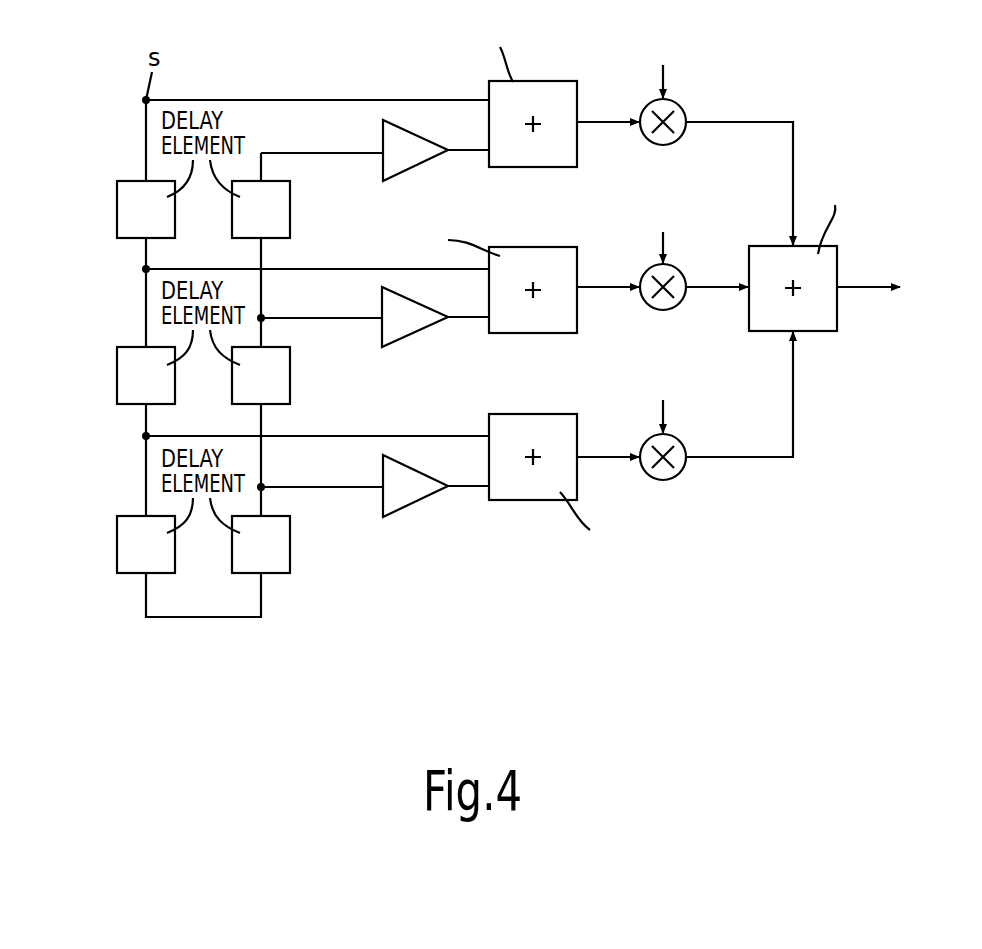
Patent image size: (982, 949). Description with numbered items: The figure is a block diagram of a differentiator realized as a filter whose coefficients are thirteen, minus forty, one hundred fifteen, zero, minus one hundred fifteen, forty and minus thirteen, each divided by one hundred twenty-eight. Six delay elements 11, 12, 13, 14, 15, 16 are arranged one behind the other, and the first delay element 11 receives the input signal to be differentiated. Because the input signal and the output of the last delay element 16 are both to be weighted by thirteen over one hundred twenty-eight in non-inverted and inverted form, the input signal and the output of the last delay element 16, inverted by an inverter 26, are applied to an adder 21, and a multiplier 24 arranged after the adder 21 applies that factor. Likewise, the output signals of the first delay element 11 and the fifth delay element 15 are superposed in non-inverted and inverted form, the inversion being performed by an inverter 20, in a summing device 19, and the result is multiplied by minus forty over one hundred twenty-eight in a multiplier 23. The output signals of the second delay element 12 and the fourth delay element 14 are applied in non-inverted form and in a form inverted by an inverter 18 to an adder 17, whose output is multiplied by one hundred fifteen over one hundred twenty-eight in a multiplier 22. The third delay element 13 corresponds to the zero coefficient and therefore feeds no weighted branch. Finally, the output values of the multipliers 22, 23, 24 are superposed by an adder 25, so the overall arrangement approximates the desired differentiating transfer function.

The first delay element 11 is at (117, 221).
The second delay element 12 is at (117, 391).
The third delay element 13 is at (117, 558).
The fourth delay element 14 is at (290, 560).
The fifth delay element 15 is at (290, 392).
The last delay element 16 is at (290, 225).
The adder 17 is at (520, 502).
The inverter 18 is at (407, 512).
The summing device 19 is at (521, 335).
The inverter 20 is at (404, 341).
The adder 21 is at (515, 168).
The multiplier 22 is at (680, 472).
The multiplier 23 is at (682, 302).
The multiplier 24 is at (680, 138).
The adder 25 is at (826, 333).
The inverter 26 is at (404, 174).